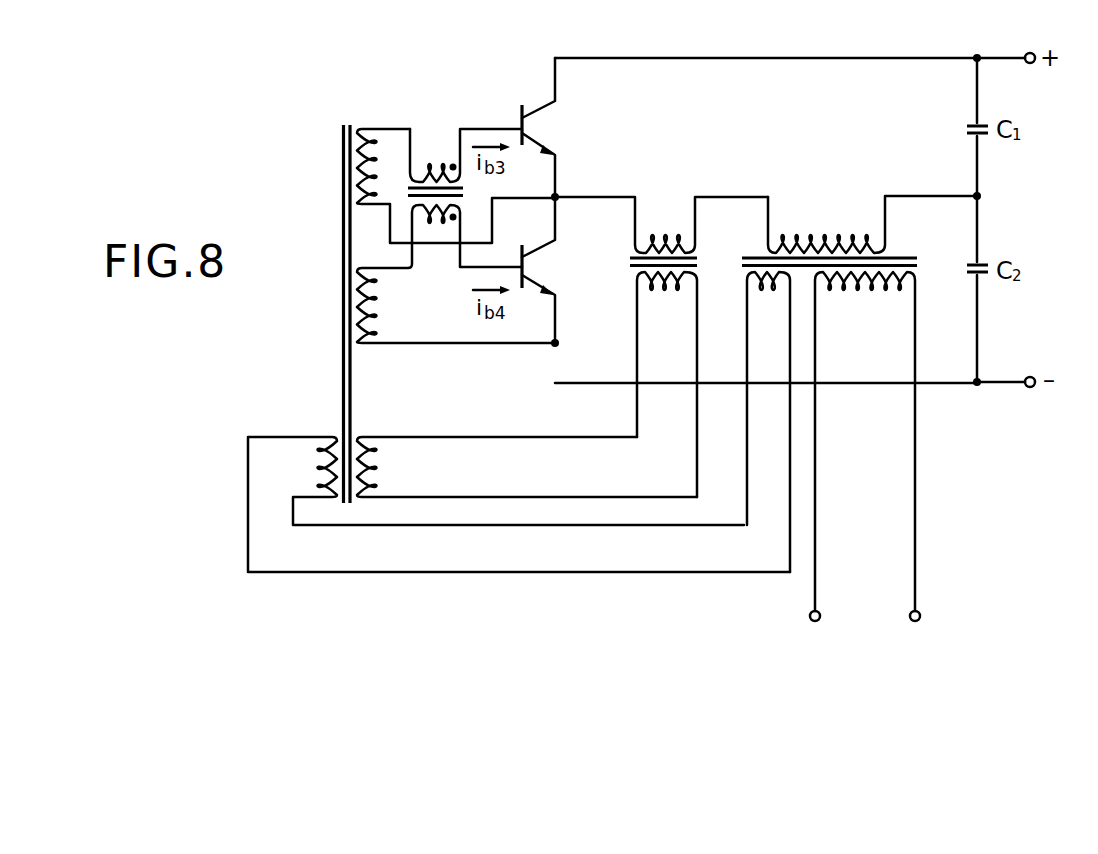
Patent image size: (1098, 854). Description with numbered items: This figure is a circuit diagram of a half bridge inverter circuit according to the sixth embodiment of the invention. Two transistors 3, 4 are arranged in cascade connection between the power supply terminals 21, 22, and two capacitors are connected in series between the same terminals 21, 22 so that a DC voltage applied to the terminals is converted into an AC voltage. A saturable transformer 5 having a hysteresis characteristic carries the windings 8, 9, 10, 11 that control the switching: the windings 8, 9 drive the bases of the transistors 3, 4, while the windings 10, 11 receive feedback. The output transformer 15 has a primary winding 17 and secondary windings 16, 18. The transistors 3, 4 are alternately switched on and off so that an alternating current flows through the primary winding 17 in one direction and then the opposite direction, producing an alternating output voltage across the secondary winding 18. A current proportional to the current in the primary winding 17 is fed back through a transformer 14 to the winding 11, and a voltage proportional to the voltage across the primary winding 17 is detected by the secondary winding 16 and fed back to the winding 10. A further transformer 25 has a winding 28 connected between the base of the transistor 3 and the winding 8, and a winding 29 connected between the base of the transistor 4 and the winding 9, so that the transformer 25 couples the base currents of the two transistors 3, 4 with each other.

The transistor 3 is at (529, 124).
The transistor 4 is at (528, 268).
The saturable transformer 5 is at (348, 125).
The winding 8 is at (365, 150).
The winding 9 is at (368, 306).
The winding 10 is at (317, 464).
The winding 11 is at (370, 464).
The transformer 14 is at (628, 262).
The output transformer 15 is at (918, 262).
The secondary winding 16 is at (775, 284).
The primary winding 17 is at (817, 240).
The secondary winding 18 is at (858, 284).
The power supply terminal 21 is at (1031, 64).
The power supply terminal 22 is at (1030, 376).
The transformer 25 is at (460, 195).
The winding 28 is at (437, 165).
The winding 29 is at (437, 221).